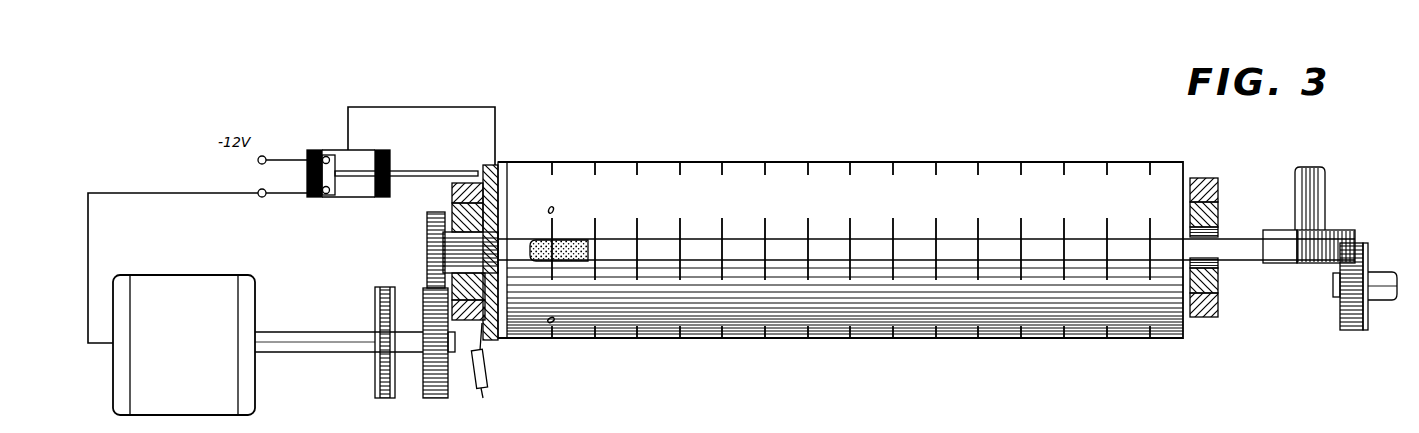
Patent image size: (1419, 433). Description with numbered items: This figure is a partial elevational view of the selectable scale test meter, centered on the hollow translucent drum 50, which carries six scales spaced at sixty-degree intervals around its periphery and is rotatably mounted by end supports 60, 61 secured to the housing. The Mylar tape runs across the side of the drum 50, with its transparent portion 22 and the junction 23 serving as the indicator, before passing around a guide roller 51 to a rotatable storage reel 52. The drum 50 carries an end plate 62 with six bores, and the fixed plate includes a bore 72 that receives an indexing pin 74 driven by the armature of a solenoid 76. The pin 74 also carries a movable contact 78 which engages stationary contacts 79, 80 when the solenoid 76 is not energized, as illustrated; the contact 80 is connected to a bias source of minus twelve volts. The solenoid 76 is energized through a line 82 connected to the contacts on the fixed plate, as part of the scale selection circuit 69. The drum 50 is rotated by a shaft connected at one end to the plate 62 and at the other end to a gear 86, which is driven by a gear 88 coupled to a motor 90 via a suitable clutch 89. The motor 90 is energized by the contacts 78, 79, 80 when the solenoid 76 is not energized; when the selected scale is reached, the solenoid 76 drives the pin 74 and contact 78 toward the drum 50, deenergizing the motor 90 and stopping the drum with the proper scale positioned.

The transparent portion 22 is at (745, 241).
The junction 23 is at (590, 250).
The drum 50 is at (952, 162).
The guide roller 51 is at (1333, 230).
The storage reel 52 is at (1335, 315).
The end support 60 is at (1205, 178).
The end support 61 is at (470, 323).
The end plate 62 is at (503, 163).
The scale selection circuit 69 is at (487, 372).
The bore 72 is at (483, 165).
The indexing pin 74 is at (431, 171).
The solenoid 76 is at (382, 150).
The movable contact 78 is at (330, 158).
The stationary contact 79 is at (325, 194).
The stationary contact 80 is at (338, 156).
The line 82 is at (478, 107).
The gear 86 is at (427, 218).
The gear 88 is at (423, 387).
The clutch 89 is at (375, 292).
The motor 90 is at (183, 275).